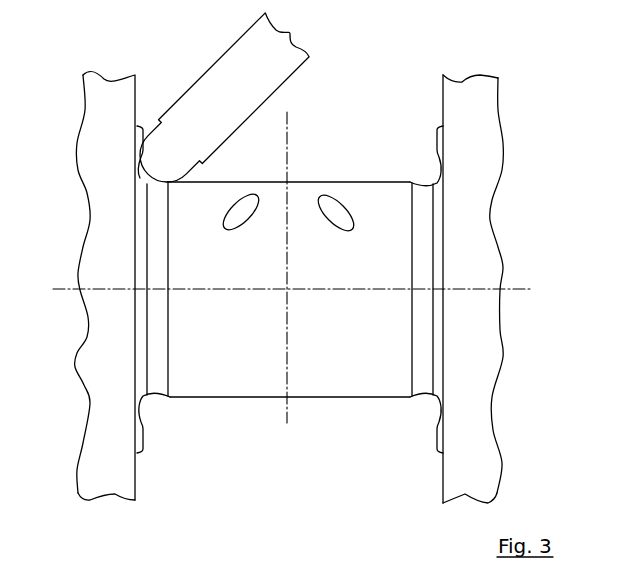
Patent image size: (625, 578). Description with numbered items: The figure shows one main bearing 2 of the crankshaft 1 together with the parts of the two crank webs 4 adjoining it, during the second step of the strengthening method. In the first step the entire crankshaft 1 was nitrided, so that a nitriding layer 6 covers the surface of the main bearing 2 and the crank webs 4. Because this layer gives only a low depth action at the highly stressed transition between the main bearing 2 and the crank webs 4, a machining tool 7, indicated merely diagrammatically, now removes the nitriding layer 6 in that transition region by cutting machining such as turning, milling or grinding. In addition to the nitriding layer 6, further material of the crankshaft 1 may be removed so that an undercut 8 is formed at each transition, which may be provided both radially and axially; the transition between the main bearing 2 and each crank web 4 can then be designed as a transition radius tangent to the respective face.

The crankshaft 1 is at (268, 287).
The main bearing 2 is at (343, 350).
The crank web 4 is at (110, 137).
The nitriding layer 6 is at (322, 182).
The machining tool 7 is at (228, 109).
The undercut 8 is at (432, 178).